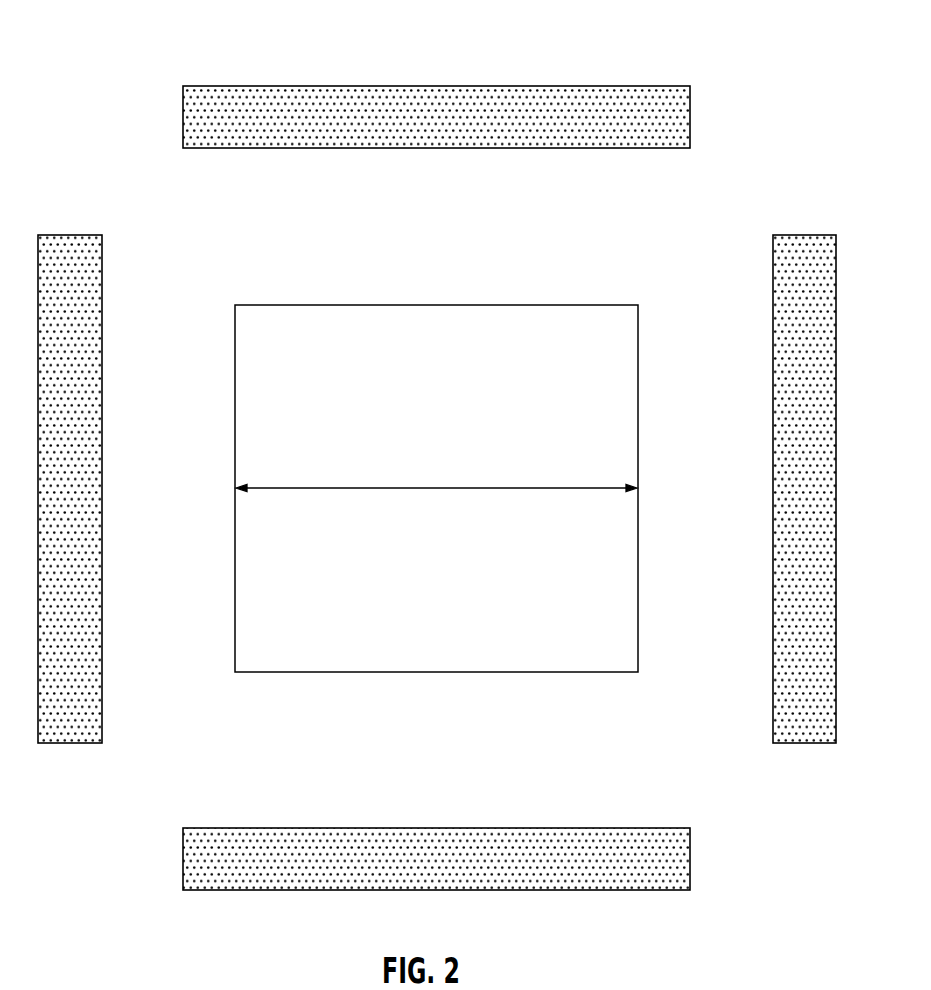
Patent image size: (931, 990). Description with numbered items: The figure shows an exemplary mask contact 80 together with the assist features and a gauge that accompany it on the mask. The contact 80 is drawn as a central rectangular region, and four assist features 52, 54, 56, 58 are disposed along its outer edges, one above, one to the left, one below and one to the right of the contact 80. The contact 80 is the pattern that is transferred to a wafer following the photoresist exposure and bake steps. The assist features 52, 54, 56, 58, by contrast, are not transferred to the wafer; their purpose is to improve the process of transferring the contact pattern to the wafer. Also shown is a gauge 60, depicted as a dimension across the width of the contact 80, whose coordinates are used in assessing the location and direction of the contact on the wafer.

The assist feature 52 is at (237, 85).
The assist feature 54 is at (62, 234).
The assist feature 56 is at (255, 827).
The assist feature 58 is at (805, 234).
The gauge 60 is at (437, 487).
The mask contact 80 is at (295, 303).